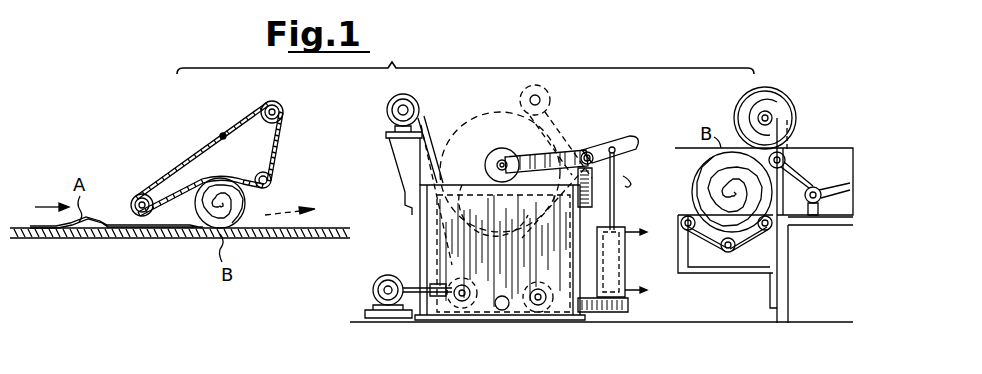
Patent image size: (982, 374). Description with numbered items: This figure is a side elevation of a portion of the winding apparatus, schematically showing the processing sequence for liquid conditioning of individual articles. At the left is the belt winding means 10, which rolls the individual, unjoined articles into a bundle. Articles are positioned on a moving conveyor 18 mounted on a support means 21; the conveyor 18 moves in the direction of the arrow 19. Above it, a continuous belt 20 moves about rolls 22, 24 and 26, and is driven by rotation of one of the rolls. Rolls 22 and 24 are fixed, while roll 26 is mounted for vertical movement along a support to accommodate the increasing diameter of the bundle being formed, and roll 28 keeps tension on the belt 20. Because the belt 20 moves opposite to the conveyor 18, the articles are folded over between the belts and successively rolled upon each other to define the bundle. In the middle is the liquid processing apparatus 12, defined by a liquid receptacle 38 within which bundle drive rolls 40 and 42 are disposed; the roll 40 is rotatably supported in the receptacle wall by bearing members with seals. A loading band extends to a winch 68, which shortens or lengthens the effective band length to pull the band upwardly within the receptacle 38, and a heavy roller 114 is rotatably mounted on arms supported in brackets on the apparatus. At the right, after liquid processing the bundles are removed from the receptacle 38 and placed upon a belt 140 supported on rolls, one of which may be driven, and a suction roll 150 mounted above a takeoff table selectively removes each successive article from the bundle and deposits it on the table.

The belt winding means 10 is at (108, 160).
The liquid processing apparatus 12 is at (578, 112).
The moving conveyor 18 is at (22, 222).
The arrow 19 is at (305, 203).
The continuous belt 20 is at (204, 152).
The support means 21 is at (45, 240).
The fixed roll 22 is at (152, 195).
The fixed roll 24 is at (284, 113).
The moveable roll 26 is at (272, 180).
The tension roll 28 is at (224, 133).
The liquid receptacle 38 is at (420, 242).
The bundle drive roll 40 is at (470, 302).
The bundle drive roll 42 is at (525, 322).
The winch 68 is at (423, 106).
The heavy roller 114 is at (496, 157).
The belt 140 is at (720, 248).
The suction roll 150 is at (794, 104).